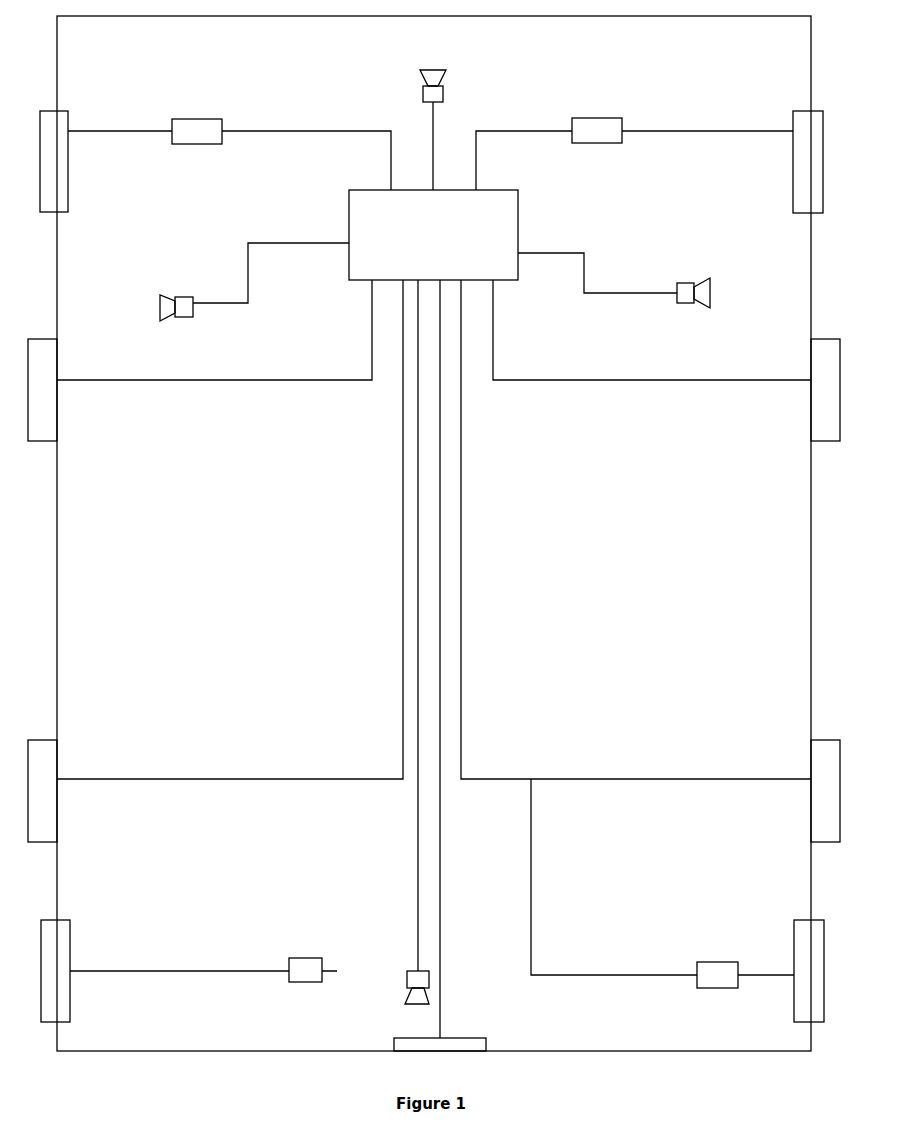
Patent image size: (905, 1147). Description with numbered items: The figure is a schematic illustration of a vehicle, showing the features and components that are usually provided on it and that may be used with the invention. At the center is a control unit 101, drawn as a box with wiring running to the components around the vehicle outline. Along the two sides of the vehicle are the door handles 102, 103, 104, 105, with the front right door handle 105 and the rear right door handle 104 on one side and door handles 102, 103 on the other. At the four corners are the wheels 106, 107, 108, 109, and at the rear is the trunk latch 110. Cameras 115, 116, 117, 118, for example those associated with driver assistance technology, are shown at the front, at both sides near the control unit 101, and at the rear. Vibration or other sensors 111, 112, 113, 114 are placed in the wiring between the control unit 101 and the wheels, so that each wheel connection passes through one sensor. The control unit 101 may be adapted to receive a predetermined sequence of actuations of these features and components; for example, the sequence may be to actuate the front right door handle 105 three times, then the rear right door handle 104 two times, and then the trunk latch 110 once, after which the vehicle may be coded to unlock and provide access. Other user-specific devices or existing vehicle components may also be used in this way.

The control unit 101 is at (462, 235).
The door handle 102 is at (60, 390).
The door handle 103 is at (60, 791).
The rear right door handle 104 is at (804, 791).
The front right door handle 105 is at (805, 390).
The wheel 106 is at (786, 162).
The wheel 107 is at (71, 161).
The wheel 108 is at (71, 971).
The wheel 109 is at (788, 971).
The trunk latch 110 is at (442, 665).
The vibration sensor 111 is at (305, 961).
The vibration sensor 112 is at (717, 965).
The vibration sensor 113 is at (597, 120).
The vibration sensor 114 is at (197, 122).
The camera 115 is at (452, 117).
The camera 116 is at (254, 282).
The camera 117 is at (614, 280).
The camera 118 is at (394, 642).